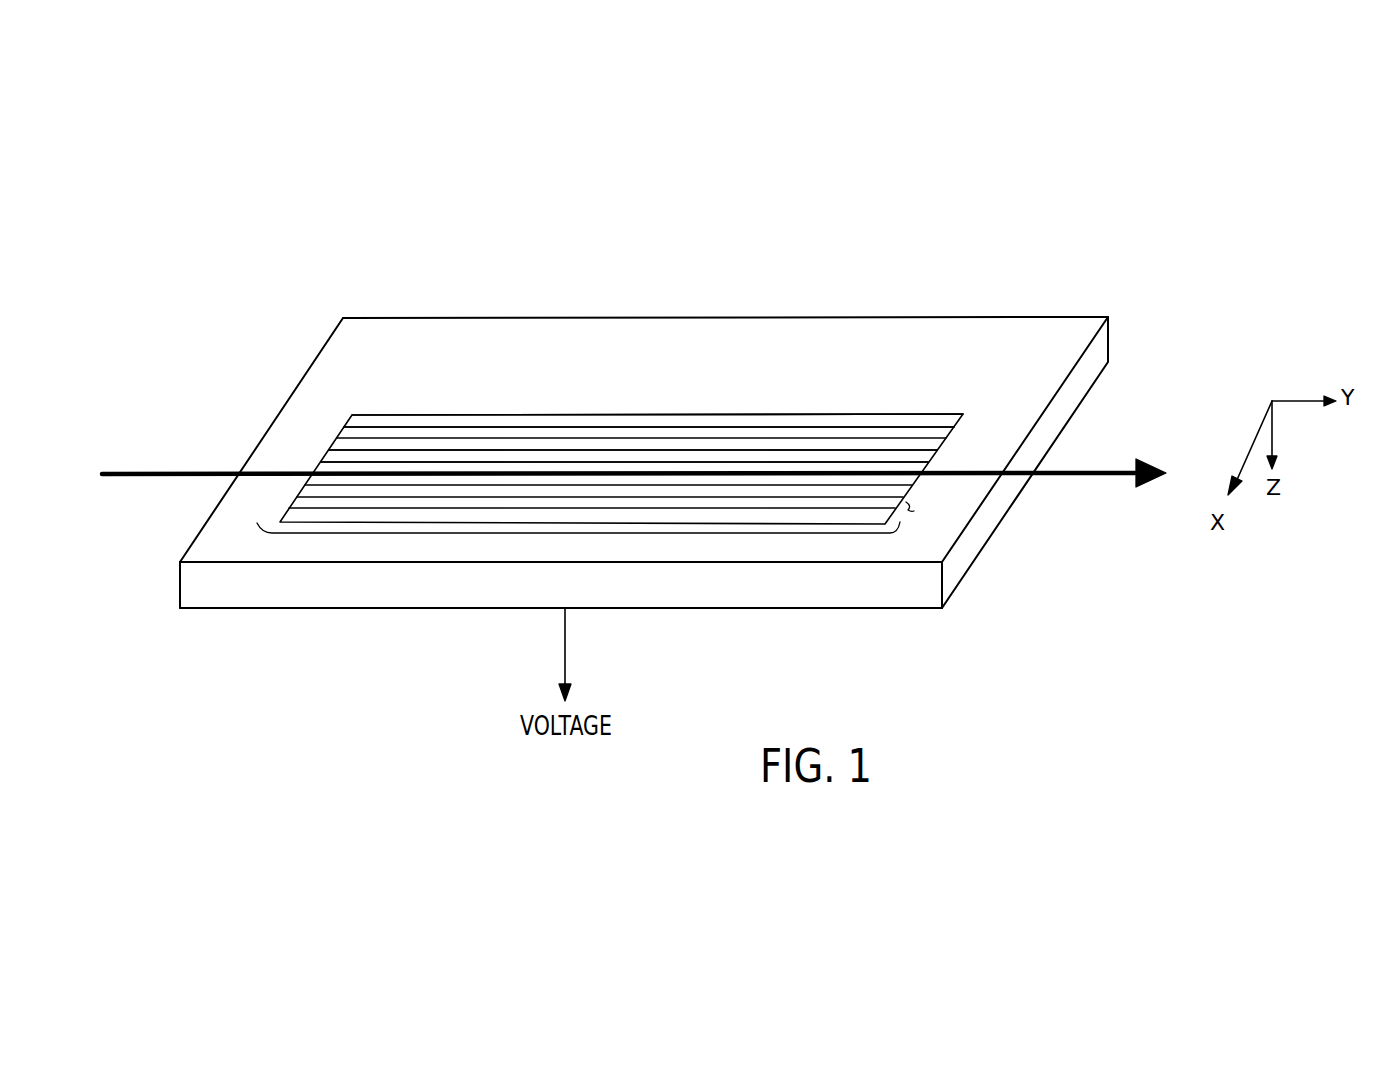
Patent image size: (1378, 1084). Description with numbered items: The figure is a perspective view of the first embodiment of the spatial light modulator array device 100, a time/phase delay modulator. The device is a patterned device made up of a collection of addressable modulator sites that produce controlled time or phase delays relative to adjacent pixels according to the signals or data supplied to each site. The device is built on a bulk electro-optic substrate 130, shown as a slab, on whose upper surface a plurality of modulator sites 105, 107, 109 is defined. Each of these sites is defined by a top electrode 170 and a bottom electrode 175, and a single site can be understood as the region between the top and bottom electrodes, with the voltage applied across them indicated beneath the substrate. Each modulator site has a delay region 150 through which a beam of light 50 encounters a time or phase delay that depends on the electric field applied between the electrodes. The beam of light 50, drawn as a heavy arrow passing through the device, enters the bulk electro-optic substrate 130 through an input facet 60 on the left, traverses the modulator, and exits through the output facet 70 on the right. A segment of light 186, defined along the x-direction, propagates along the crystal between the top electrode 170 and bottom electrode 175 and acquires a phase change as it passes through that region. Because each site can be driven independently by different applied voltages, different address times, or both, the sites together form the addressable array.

The spatial light modulator array device 100 is at (434, 284).
The beam of light 50 is at (173, 470).
The input facet 60 is at (197, 535).
The output facet 70 is at (957, 565).
The modulator site 105 is at (730, 421).
The modulator site 107 is at (662, 437).
The modulator site 109 is at (601, 450).
The bulk electro-optic substrate 130 is at (317, 590).
The delay region 150 is at (605, 532).
The top electrode 170 is at (898, 418).
The bottom electrode 175 is at (460, 610).
The segment of light 186 is at (914, 511).